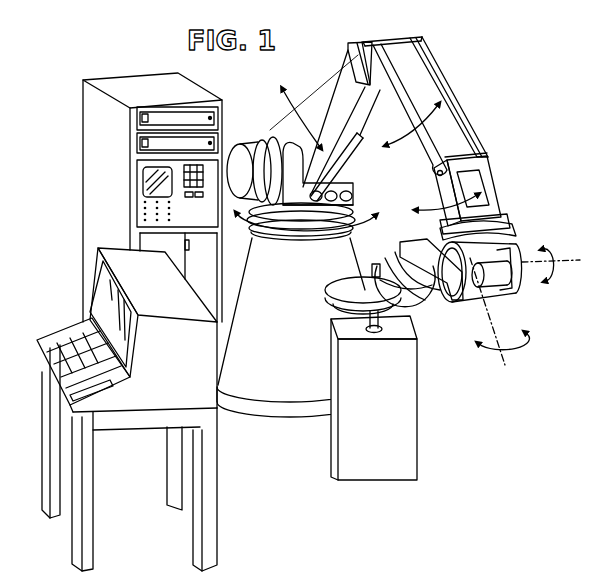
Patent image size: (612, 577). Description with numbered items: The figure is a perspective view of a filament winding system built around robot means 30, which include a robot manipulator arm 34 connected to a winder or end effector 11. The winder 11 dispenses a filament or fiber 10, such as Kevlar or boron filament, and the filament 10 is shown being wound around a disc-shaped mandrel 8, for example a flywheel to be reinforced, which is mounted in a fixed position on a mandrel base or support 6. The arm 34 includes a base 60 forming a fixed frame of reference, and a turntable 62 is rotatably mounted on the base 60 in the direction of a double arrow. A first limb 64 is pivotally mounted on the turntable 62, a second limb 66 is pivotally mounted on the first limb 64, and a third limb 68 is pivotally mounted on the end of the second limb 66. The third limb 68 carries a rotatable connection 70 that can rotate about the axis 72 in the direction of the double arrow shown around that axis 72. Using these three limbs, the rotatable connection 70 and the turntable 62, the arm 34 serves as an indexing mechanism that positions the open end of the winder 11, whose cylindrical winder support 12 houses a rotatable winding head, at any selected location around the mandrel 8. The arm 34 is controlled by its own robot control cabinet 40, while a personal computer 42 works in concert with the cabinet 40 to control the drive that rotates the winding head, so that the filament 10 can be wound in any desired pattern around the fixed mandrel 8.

The mandrel base 6 is at (404, 412).
The disc-shaped mandrel 8 is at (330, 290).
The filament 10 is at (433, 289).
The winder 11 is at (590, 192).
The winder support 12 is at (515, 304).
The robot means 30 is at (474, 120).
The robot manipulator arm 34 is at (420, 78).
The robot control cabinet 40 is at (87, 198).
The personal computer 42 is at (105, 293).
The base 60 is at (292, 397).
The turntable 62 is at (357, 206).
The first limb 64 is at (338, 84).
The second limb 66 is at (438, 91).
The third limb 68 is at (484, 189).
The rotatable connection 70 is at (510, 231).
The axis 72 is at (509, 360).